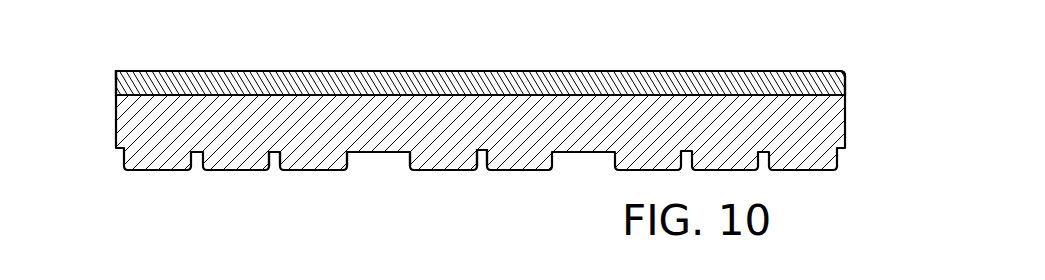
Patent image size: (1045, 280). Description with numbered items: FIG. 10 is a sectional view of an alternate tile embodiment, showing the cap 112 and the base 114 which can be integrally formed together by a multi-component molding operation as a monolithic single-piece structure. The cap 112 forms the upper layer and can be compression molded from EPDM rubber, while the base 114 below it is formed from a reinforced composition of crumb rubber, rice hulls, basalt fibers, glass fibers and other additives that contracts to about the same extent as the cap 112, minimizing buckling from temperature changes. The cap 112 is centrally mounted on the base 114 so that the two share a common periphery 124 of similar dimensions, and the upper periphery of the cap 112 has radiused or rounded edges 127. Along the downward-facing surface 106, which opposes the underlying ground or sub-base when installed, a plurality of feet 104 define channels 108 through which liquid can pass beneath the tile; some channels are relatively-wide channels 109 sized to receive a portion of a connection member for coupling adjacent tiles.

The feet 104 is at (160, 163).
The downward-facing surface 106 is at (482, 163).
The channels 108 is at (273, 163).
The relatively-wide channels 109 is at (382, 163).
The cap 112 is at (833, 83).
The base 114 is at (835, 122).
The common periphery 124 is at (116, 95).
The radiused or rounded edges 127 is at (115, 71).